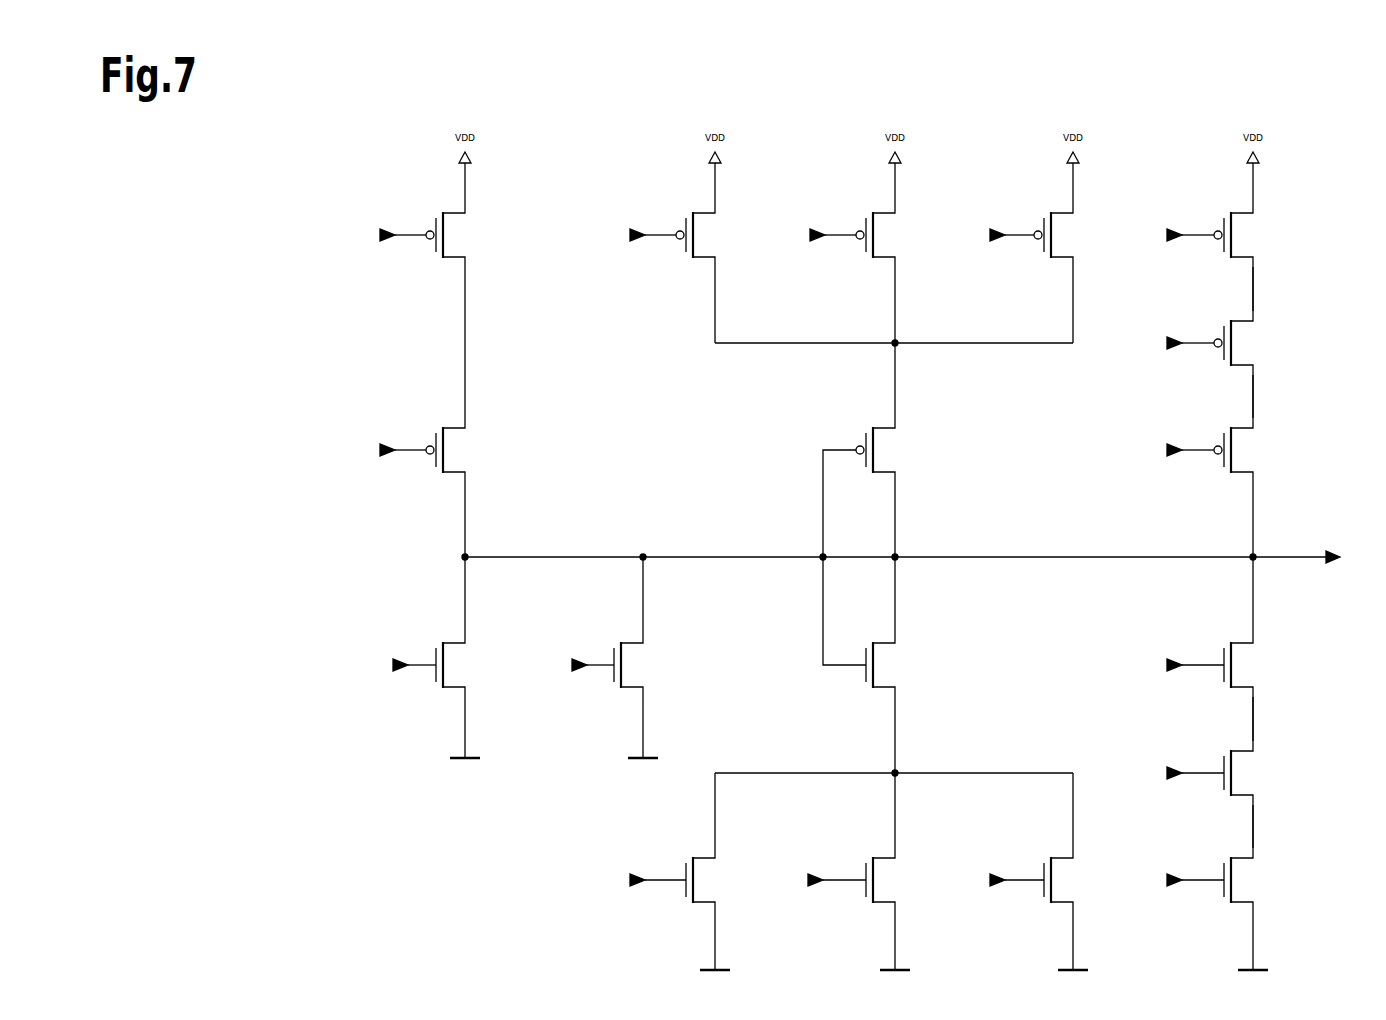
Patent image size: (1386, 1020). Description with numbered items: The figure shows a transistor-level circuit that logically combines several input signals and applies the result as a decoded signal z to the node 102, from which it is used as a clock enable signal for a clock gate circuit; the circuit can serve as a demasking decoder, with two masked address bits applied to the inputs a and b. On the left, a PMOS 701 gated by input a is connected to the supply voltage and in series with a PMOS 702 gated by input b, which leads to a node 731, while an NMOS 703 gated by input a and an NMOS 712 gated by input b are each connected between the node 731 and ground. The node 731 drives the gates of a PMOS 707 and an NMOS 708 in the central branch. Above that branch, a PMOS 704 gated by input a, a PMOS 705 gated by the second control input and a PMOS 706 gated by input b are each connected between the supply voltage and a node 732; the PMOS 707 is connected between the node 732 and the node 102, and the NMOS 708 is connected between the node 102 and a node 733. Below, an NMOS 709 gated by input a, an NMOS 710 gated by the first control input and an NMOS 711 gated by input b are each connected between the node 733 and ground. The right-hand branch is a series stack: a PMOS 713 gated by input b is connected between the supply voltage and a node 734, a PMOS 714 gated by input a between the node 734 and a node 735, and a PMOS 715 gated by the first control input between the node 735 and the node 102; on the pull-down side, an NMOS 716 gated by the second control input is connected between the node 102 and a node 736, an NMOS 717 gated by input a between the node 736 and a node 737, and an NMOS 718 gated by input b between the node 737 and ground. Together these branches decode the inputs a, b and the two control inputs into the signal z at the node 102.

The node 102 is at (1308, 542).
The PMOS 701 is at (413, 235).
The PMOS 702 is at (413, 450).
The NMOS 703 is at (422, 665).
The PMOS 704 is at (663, 235).
The PMOS 705 is at (839, 235).
The PMOS 706 is at (1022, 235).
The PMOS 707 is at (869, 541).
The NMOS 708 is at (891, 665).
The NMOS 709 is at (663, 880).
The NMOS 710 is at (834, 880).
The NMOS 711 is at (1022, 880).
The NMOS 712 is at (601, 627).
The PMOS 713 is at (1201, 235).
The PMOS 714 is at (1201, 343).
The PMOS 715 is at (1192, 450).
The NMOS 716 is at (1192, 665).
The NMOS 717 is at (1201, 773).
The NMOS 718 is at (1201, 880).
The node 731 is at (837, 550).
The node 732 is at (894, 330).
The node 733 is at (894, 789).
The node 734 is at (1273, 289).
The node 735 is at (1273, 396).
The node 736 is at (1273, 719).
The node 737 is at (1273, 826).